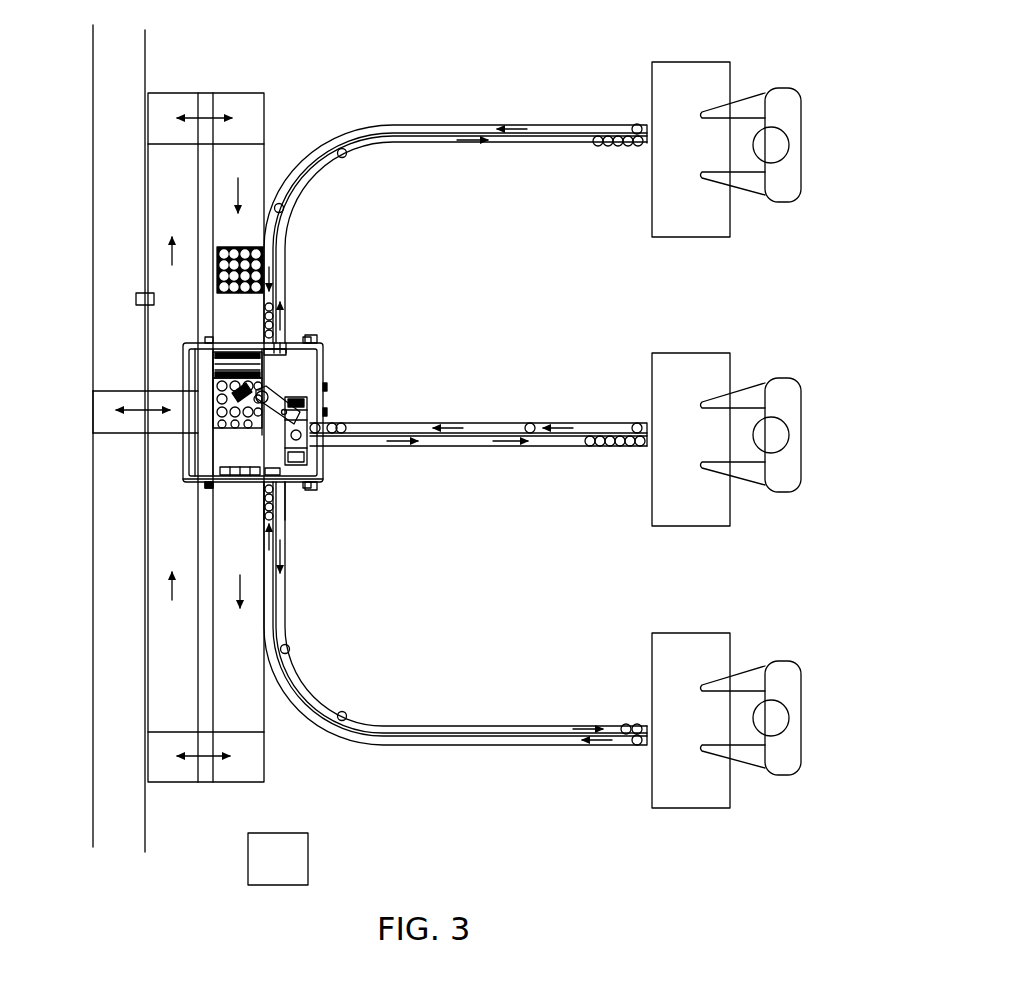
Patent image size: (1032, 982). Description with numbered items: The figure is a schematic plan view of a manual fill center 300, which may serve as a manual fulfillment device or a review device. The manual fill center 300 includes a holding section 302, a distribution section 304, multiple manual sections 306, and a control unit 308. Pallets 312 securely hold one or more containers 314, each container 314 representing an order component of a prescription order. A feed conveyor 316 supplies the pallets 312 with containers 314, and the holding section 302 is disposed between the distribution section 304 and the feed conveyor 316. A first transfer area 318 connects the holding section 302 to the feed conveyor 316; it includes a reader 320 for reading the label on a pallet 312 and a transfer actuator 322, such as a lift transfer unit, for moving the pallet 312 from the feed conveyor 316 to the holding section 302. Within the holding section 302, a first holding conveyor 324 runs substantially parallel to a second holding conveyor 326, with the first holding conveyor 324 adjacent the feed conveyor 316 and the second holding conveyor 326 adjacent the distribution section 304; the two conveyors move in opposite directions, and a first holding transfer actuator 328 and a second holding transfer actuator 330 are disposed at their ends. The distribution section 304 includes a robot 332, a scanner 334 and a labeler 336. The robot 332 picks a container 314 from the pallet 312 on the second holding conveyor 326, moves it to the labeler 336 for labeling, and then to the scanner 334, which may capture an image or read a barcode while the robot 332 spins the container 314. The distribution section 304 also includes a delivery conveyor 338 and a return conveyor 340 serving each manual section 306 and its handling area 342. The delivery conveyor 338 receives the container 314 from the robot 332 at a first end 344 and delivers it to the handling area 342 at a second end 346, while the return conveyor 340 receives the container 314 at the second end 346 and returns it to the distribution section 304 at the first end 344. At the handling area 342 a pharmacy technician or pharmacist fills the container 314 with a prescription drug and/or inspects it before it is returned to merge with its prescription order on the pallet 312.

The manual fill center 300 is at (440, 68).
The holding section 302 is at (250, 78).
The distribution section 304 is at (290, 343).
The manual section 306 is at (454, 372).
The control unit 308 is at (278, 866).
The pallet 312 is at (262, 264).
The container 314 is at (250, 247).
The feed conveyor 316 is at (135, 810).
The first transfer area 318 is at (115, 422).
The reader 320 is at (142, 296).
The transfer actuator 322 is at (93, 408).
The first holding conveyor 324 is at (158, 642).
The second holding conveyor 326 is at (255, 705).
The first holding transfer actuator 328 is at (250, 767).
The second holding transfer actuator 330 is at (262, 106).
The robot 332 is at (323, 447).
The scanner 334 is at (200, 487).
The labeler 336 is at (227, 482).
The delivery conveyor 338 is at (533, 128).
The return conveyor 340 is at (513, 142).
The handling area 342 is at (683, 85).
The first end 344 is at (285, 490).
The second end 346 is at (642, 723).